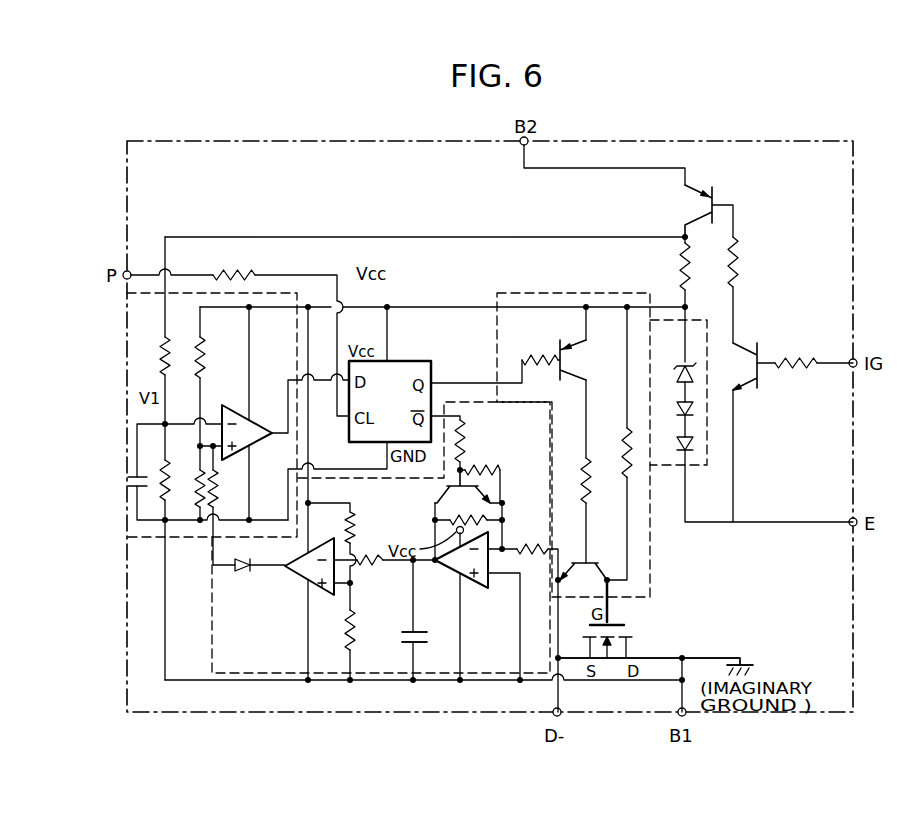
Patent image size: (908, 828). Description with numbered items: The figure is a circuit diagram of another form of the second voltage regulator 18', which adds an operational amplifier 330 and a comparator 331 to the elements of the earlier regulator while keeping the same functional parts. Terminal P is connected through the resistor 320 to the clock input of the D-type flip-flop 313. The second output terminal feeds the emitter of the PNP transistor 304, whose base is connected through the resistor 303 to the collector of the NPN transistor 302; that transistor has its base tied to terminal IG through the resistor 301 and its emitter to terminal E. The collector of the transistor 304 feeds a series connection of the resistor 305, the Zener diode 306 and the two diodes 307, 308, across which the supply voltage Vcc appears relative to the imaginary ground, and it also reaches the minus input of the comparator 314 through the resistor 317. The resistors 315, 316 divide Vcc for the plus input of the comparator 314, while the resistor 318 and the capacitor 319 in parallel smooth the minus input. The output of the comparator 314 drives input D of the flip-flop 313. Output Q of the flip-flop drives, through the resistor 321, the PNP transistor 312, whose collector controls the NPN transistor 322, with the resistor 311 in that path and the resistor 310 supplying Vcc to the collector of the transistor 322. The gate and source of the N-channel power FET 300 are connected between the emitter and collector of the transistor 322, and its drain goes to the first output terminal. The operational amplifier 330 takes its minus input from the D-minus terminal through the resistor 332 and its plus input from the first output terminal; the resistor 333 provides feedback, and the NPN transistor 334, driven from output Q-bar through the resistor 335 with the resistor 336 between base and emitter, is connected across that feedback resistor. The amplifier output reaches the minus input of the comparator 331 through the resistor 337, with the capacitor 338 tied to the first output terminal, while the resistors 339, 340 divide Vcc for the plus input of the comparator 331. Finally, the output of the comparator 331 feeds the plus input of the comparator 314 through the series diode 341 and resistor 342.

The N-channel power FET 300 is at (618, 626).
The resistor 301 is at (800, 368).
The NPN transistor 302 is at (745, 385).
The resistor 303 is at (737, 266).
The PNP transistor 304 is at (695, 206).
The resistor 305 is at (682, 268).
The Zener diode 306 is at (692, 366).
The diode 307 is at (692, 410).
The diode 308 is at (692, 445).
The resistor 310 is at (625, 442).
The resistor 311 is at (588, 485).
The PNP transistor 312 is at (565, 360).
The D-type flip-flop 313 is at (420, 361).
The comparator 314 is at (260, 444).
The resistor 315 is at (207, 363).
The resistor 316 is at (197, 502).
The resistor 317 is at (162, 352).
The resistor 318 is at (162, 472).
The capacitor 319 is at (130, 490).
The resistor 320 is at (258, 275).
The resistor 321 is at (537, 358).
The NPN transistor 322 is at (590, 562).
The operational amplifier 330 is at (478, 590).
The comparator 331 is at (300, 582).
The resistor 332 is at (530, 550).
The resistor 333 is at (472, 520).
The NPN transistor 334 is at (445, 492).
The resistor 335 is at (465, 441).
The resistor 336 is at (482, 466).
The resistor 337 is at (372, 565).
The capacitor 338 is at (420, 628).
The resistor 339 is at (356, 530).
The resistor 340 is at (354, 630).
The diode 341 is at (243, 572).
The resistor 342 is at (212, 527).
The second voltage regulator 18' is at (666, 722).